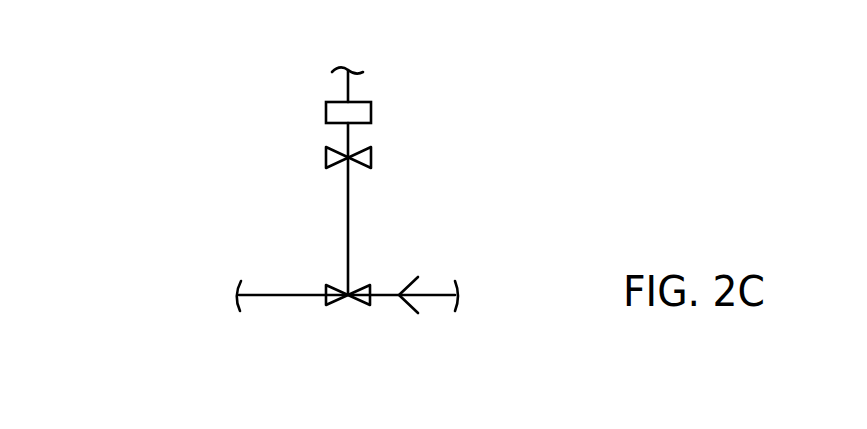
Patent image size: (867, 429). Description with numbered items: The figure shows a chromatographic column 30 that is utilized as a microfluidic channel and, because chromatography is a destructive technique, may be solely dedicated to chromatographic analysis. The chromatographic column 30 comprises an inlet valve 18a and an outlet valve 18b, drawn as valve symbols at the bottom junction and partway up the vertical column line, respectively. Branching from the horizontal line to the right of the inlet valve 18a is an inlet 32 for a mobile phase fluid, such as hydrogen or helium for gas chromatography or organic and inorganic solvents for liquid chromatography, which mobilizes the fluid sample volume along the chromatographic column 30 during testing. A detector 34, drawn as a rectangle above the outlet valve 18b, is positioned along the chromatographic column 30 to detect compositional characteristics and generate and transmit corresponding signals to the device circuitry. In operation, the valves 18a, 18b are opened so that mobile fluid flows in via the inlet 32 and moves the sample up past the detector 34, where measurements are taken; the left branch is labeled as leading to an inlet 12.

The chromatographic column 30 is at (245, 93).
The detector 34 is at (371, 112).
The outlet valve 18b is at (326, 157).
The inlet valve 18a is at (334, 284).
The inlet 32 is at (425, 293).
The inlet 12 is at (155, 296).